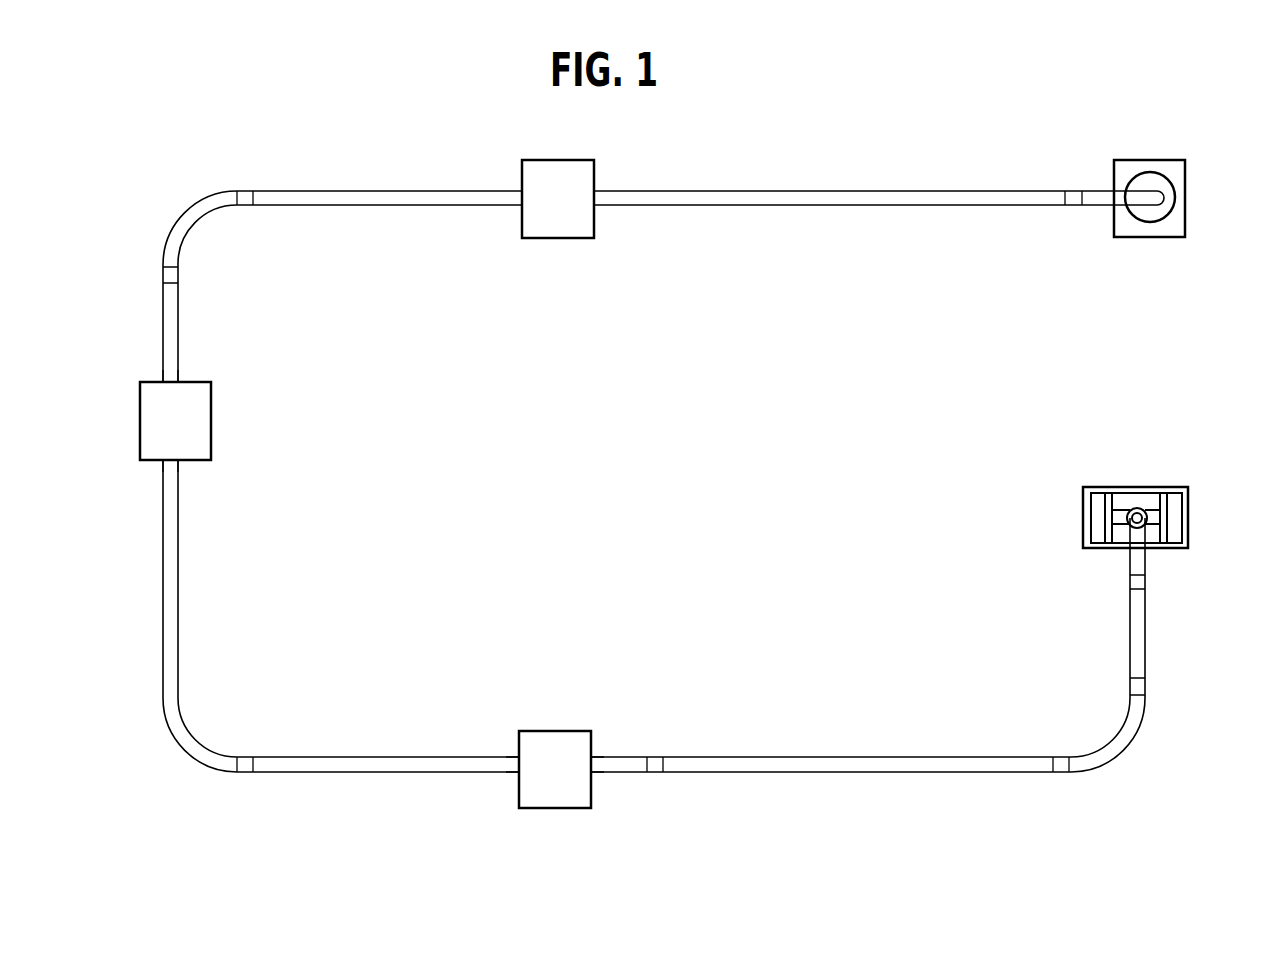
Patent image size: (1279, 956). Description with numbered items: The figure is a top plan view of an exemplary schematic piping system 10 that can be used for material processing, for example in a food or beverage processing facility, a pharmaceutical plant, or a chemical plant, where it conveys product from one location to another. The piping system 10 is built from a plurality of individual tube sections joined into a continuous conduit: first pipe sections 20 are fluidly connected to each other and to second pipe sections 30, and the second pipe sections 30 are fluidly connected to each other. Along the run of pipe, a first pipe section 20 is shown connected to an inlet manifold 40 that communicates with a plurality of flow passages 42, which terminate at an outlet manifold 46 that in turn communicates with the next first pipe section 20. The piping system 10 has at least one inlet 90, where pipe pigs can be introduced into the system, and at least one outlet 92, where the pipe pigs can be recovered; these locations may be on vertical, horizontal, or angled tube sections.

The piping system 10 is at (980, 85).
The first pipe section 20 is at (443, 763).
The second pipe section 30 is at (170, 316).
The inlet manifold 40 is at (163, 461).
The flow passages 42 is at (158, 421).
The outlet manifold 46 is at (163, 382).
The inlet 90 is at (1178, 518).
The outlet 92 is at (1175, 170).